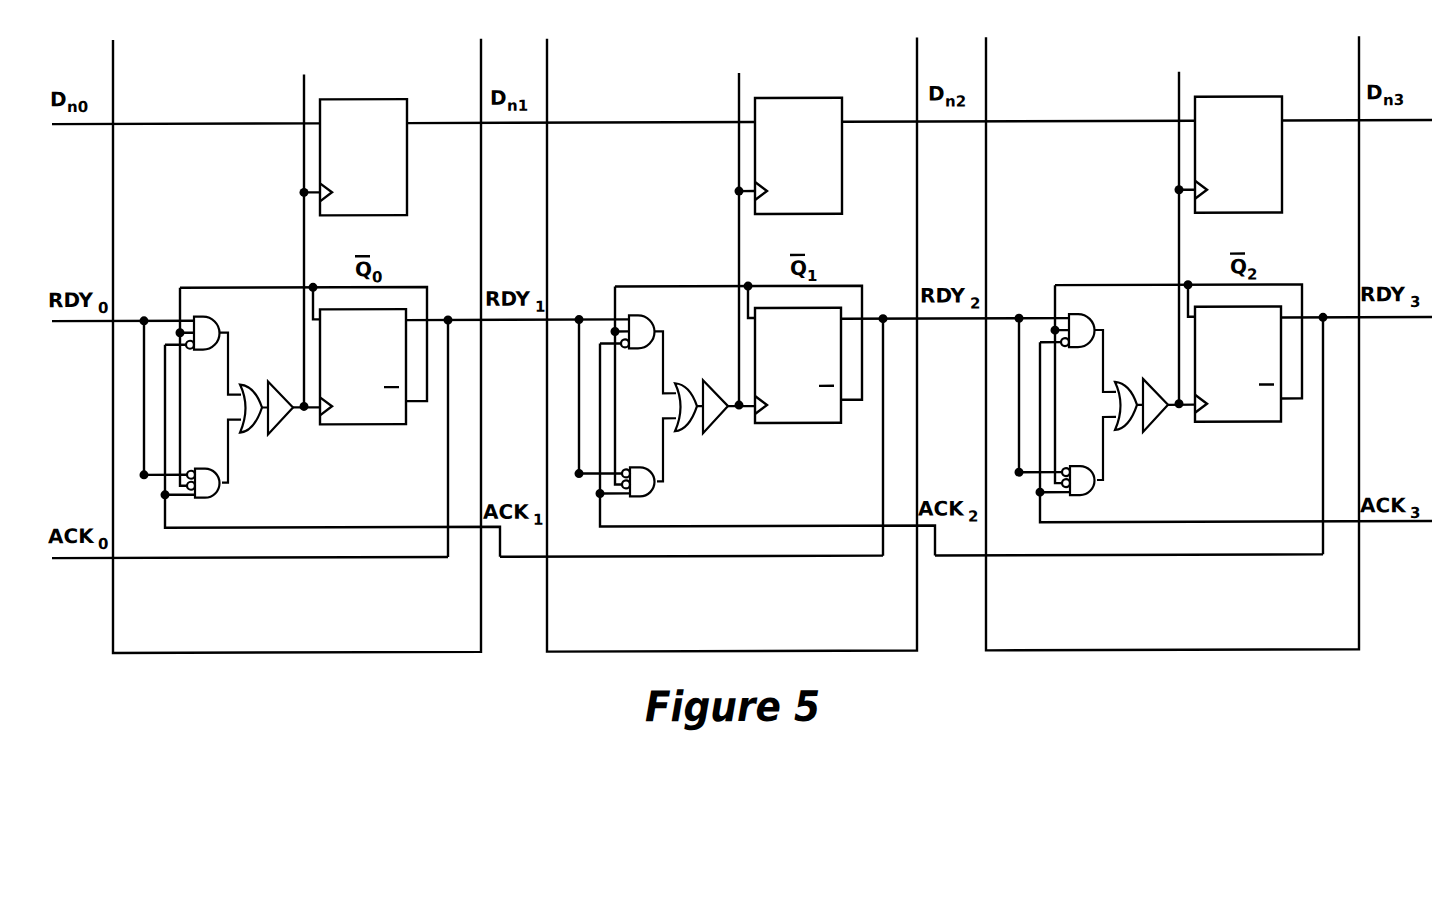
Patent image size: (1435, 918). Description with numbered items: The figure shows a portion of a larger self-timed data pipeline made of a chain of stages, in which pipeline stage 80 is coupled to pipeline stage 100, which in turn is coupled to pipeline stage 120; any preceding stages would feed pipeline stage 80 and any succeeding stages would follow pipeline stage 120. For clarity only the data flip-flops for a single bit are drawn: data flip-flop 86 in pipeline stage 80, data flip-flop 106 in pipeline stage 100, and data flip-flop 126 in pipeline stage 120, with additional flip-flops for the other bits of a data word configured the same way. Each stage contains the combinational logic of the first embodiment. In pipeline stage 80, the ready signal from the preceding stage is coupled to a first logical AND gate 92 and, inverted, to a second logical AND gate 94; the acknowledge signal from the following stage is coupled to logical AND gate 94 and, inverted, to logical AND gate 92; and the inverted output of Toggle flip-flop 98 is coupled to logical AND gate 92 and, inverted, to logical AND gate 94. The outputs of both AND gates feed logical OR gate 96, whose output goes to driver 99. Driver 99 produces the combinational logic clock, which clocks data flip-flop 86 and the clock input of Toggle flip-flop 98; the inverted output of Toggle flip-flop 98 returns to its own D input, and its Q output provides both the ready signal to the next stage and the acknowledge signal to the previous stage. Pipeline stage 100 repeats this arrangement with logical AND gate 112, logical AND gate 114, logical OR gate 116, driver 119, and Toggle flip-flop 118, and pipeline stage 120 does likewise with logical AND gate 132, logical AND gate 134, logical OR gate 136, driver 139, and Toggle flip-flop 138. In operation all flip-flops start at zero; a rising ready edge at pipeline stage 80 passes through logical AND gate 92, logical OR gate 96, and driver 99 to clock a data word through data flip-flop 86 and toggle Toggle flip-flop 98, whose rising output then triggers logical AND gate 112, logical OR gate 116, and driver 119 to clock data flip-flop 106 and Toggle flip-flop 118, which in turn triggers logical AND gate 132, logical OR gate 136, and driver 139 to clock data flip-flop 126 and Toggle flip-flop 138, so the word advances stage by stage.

The pipeline stage 80 is at (297, 346).
The pipeline stage 100 is at (732, 345).
The pipeline stage 120 is at (1172, 343).
The data flip-flop 86 is at (363, 157).
The data flip-flop 106 is at (798, 156).
The data flip-flop 126 is at (1238, 154).
The first logical AND gate 92 is at (212, 317).
The second logical AND gate 94 is at (212, 498).
The logical OR gate 96 is at (251, 432).
The Toggle flip-flop 98 is at (363, 366).
The driver 99 is at (275, 384).
The logical AND gate 112 is at (665, 345).
The logical AND gate 114 is at (661, 470).
The logical OR gate 116 is at (697, 424).
The Toggle flip-flop 118 is at (798, 365).
The driver 119 is at (728, 387).
The logical AND gate 132 is at (1107, 344).
The logical AND gate 134 is at (1101, 469).
The logical OR gate 136 is at (1146, 423).
The Toggle flip-flop 138 is at (1238, 363).
The driver 139 is at (1166, 386).